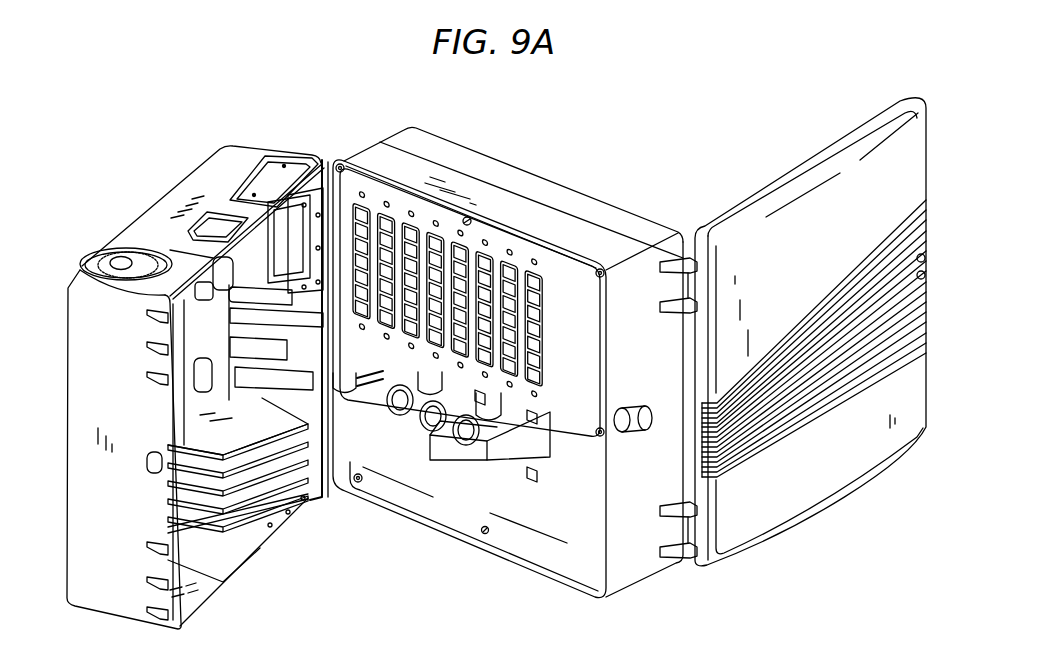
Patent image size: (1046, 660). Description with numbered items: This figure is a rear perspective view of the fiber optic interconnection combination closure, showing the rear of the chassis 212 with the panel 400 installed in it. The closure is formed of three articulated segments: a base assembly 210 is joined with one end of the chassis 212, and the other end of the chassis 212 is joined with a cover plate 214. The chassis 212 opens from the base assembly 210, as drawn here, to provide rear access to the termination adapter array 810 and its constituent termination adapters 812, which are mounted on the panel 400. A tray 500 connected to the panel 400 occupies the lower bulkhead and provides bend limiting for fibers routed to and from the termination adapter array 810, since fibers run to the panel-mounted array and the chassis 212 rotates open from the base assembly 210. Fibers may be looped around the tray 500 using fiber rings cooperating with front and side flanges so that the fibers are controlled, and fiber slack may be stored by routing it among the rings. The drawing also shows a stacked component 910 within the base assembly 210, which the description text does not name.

The base assembly 210 is at (183, 188).
The chassis 212 is at (517, 167).
The cover plate 214 is at (858, 143).
The panel 400 is at (570, 282).
The tray 500 is at (447, 452).
The termination adapter array 810 is at (405, 223).
The termination adapters 812 is at (362, 195).
The splice trays 910 is at (373, 388).